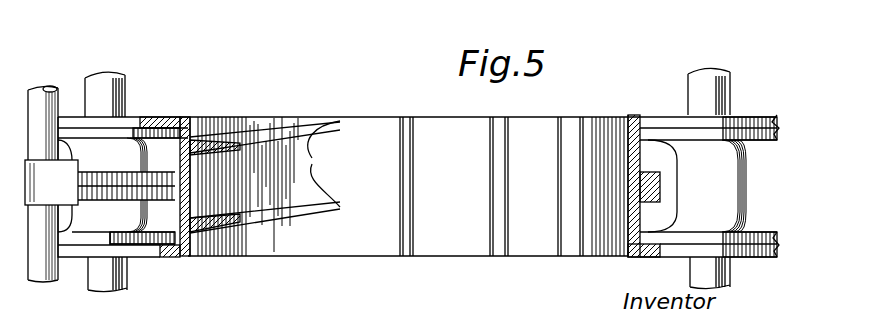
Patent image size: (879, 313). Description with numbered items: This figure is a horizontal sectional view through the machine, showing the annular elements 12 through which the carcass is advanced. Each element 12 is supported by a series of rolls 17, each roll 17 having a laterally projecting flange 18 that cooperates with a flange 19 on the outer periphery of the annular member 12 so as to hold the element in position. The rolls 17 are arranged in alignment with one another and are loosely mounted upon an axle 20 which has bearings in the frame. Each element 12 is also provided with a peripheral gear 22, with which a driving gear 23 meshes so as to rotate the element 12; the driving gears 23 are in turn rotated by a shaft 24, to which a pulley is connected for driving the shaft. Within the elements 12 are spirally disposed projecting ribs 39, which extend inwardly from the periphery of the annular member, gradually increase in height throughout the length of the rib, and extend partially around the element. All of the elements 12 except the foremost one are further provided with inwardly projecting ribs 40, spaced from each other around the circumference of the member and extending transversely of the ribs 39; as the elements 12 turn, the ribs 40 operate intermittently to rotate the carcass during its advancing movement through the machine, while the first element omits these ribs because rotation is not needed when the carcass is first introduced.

The annular element 12 is at (627, 140).
The roll 17 is at (133, 137).
The laterally projecting flange 18 is at (148, 250).
The flange 19 is at (192, 81).
The axle 20 is at (110, 74).
The peripheral gear 22 is at (190, 185).
The driving gear 23 is at (109, 200).
The shaft 24 is at (48, 87).
The spirally disposed projecting rib 39 is at (324, 164).
The inwardly projecting rib 40 is at (462, 271).